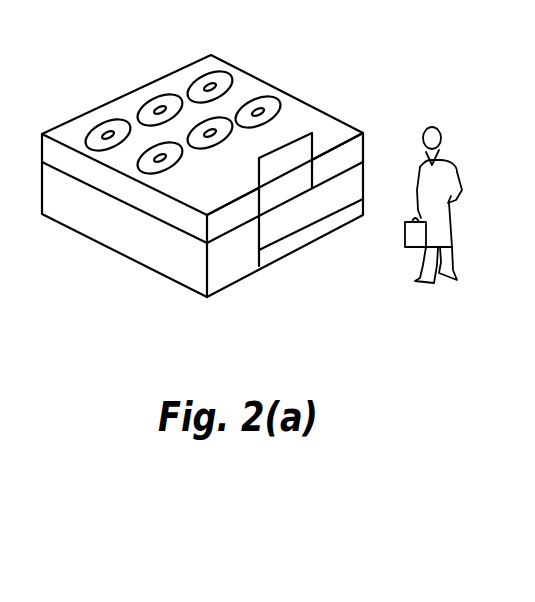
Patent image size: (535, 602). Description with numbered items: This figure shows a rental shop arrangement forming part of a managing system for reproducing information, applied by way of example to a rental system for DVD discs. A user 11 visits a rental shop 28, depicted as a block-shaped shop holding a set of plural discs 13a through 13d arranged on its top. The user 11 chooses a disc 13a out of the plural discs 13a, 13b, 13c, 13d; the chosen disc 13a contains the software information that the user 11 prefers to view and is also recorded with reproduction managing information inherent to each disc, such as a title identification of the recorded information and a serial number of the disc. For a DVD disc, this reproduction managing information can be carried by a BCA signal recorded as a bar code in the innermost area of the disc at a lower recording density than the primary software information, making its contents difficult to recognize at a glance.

The user 11 is at (448, 148).
The disc 13a is at (98, 126).
The disc 13b is at (150, 101).
The disc 13c is at (197, 80).
The disc 13d is at (282, 99).
The rental shop 28 is at (277, 265).